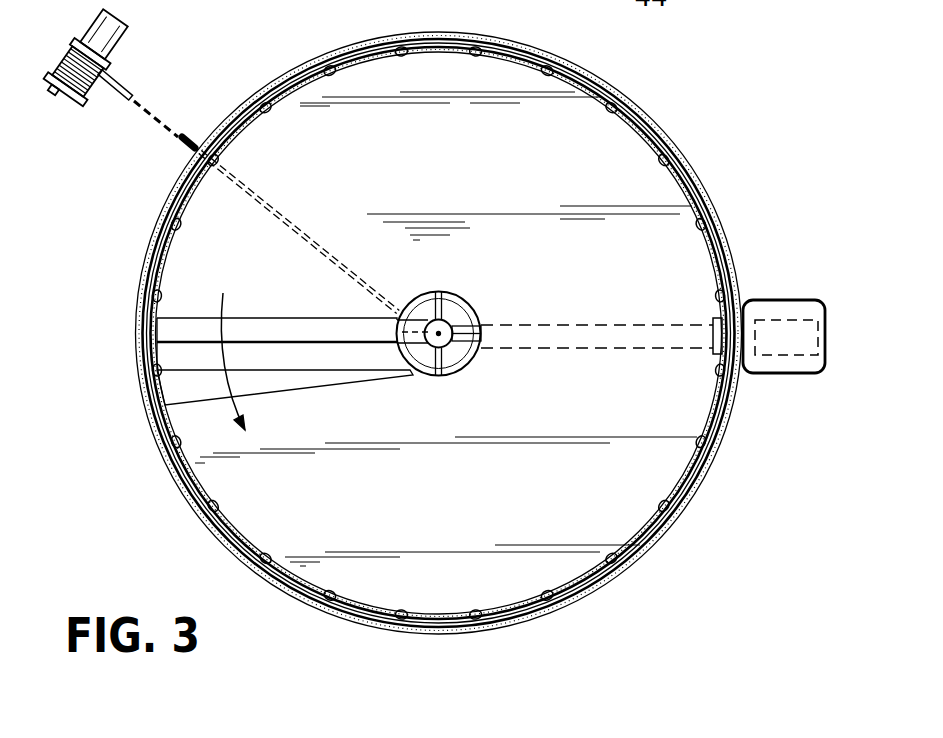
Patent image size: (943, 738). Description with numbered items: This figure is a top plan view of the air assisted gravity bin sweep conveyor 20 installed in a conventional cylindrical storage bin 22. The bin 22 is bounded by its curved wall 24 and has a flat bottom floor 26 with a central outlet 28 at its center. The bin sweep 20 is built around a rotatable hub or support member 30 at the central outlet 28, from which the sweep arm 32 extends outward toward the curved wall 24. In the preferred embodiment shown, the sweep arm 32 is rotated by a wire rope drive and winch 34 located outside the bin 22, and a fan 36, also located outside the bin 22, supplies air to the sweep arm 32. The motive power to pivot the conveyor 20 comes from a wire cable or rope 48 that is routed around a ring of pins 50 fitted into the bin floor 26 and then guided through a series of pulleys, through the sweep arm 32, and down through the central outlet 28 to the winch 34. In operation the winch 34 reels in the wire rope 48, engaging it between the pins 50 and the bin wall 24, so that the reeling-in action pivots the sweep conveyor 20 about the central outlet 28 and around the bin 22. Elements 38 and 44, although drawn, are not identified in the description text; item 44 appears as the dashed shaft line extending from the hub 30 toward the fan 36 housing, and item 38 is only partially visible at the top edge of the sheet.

The air assisted gravity bin sweep conveyor 20 is at (352, 397).
The cylindrical storage bin 22 is at (665, 112).
The curved wall 24 is at (723, 258).
The flat bottom floor 26 is at (640, 205).
The central outlet 28 is at (473, 305).
The rotatable hub or support member 30 is at (462, 355).
The sweep arm 32 is at (322, 306).
The wire rope drive and winch 34 is at (88, 100).
The fan 36 is at (792, 345).
The support member 38 is at (759, 7).
The axle 44 is at (605, 352).
The wire cable or rope 48 is at (185, 150).
The pins 50 is at (600, 112).